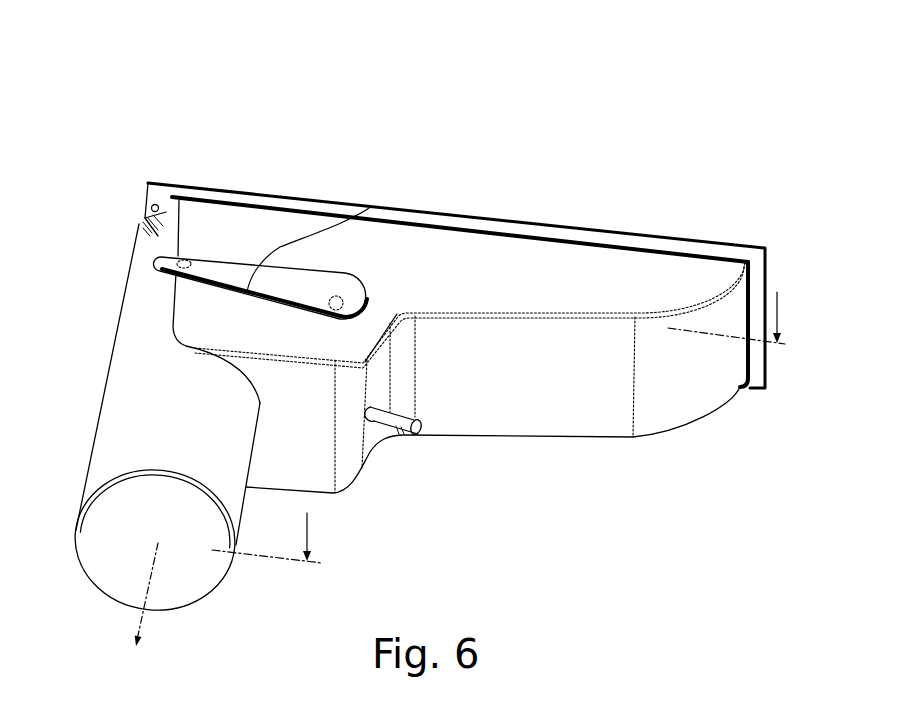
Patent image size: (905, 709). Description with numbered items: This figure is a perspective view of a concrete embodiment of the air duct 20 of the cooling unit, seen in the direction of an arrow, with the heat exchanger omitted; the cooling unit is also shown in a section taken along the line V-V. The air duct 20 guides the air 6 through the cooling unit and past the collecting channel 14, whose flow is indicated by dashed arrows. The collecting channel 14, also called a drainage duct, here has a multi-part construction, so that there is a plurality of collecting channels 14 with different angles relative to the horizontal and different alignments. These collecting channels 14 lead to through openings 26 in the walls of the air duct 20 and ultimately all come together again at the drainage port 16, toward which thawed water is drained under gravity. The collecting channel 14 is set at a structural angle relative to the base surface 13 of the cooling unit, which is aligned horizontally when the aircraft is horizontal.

The air 6 is at (667, 203).
The base surface 13 is at (157, 192).
The collecting channel 14 is at (340, 295).
The drainage port 16 is at (392, 436).
The air duct 20 is at (150, 317).
The through opening 26 is at (187, 260).